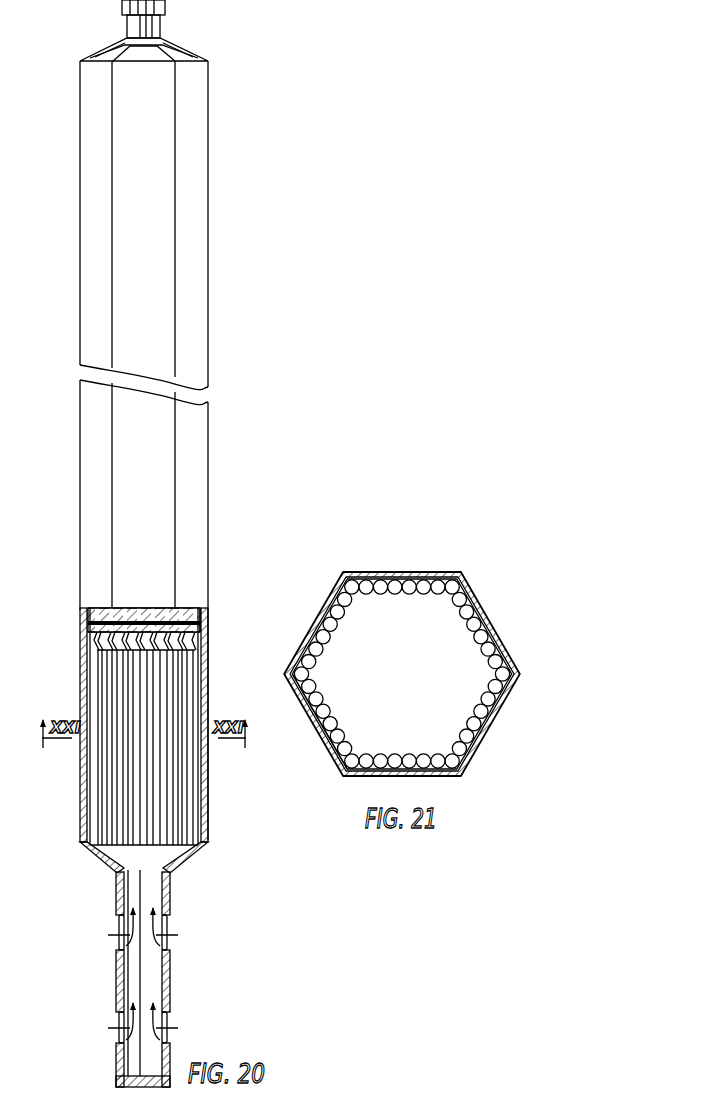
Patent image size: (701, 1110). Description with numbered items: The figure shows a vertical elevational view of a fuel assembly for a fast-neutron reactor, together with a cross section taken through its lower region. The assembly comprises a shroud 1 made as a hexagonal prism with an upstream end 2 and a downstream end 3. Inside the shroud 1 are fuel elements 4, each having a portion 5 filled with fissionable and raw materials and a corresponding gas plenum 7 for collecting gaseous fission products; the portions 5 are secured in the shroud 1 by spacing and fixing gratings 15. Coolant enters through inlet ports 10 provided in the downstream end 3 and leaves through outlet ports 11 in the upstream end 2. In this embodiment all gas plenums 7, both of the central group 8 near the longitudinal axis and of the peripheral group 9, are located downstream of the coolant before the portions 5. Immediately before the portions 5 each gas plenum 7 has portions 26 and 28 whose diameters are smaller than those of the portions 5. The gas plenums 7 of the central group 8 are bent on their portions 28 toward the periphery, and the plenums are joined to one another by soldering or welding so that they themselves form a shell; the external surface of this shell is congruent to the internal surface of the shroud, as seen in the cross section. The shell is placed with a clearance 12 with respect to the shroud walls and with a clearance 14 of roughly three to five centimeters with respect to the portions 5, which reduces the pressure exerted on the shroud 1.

In FIG. 20, the shroud 1 is at (180, 292).
In FIG. 21, the shroud 1 is at (375, 574).
In FIG. 20, the upstream end 2 is at (160, 26).
In FIG. 20, the downstream end 3 is at (172, 984).
In FIG. 20, the fuel elements 4 is at (82, 614).
In FIG. 20, the portions filled with fissionable and raw materials 5 is at (212, 405).
In FIG. 20, the gas plenums 7 is at (92, 700).
In FIG. 21, the gas plenums 7 is at (370, 583).
In FIG. 20, the central group 8 is at (94, 815).
In FIG. 20, the peripheral group 9 is at (86, 757).
In FIG. 21, the peripheral group 9 is at (331, 601).
In FIG. 20, the inlet ports 10 is at (120, 940).
In FIG. 20, the outlet ports 11 is at (175, 50).
In FIG. 20, the clearance 12 is at (200, 757).
In FIG. 21, the clearance 12 is at (318, 628).
In FIG. 20, the clearance 14 is at (198, 637).
In FIG. 20, the spacing and fixing gratings 15 is at (84, 622).
In FIG. 20, the reduced-diameter portion 26 is at (95, 650).
In FIG. 20, the reduced-diameter portion with bend 28 is at (92, 638).